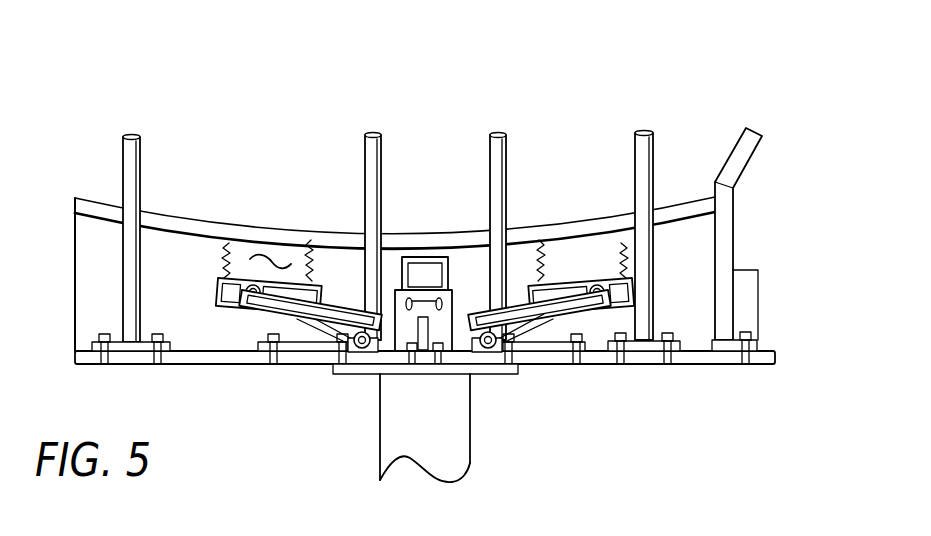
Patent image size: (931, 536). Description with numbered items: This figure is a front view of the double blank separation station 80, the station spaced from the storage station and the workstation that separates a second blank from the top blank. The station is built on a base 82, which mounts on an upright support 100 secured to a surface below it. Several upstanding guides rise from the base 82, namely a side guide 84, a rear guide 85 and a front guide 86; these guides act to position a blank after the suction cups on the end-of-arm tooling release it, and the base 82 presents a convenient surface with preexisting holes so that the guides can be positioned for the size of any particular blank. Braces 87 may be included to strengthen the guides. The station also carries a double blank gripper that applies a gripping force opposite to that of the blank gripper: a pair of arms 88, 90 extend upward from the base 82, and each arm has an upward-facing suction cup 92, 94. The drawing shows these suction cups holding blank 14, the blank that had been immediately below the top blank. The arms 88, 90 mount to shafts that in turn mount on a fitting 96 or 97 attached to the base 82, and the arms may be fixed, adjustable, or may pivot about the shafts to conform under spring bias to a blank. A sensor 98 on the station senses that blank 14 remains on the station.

The double blank separation station 80 is at (201, 109).
The blank 14 is at (176, 213).
The base 82 is at (182, 365).
The side guide 84 is at (763, 130).
The rear guide 85 is at (368, 132).
The front guide 86 is at (123, 163).
The brace 87 is at (758, 272).
The arm 88 is at (292, 312).
The arm 90 is at (575, 312).
The suction cup 92 is at (300, 262).
The suction cup 94 is at (360, 350).
The fitting 96 is at (310, 333).
The fitting 97 is at (484, 337).
The sensor 98 is at (424, 257).
The upright support 100 is at (470, 463).